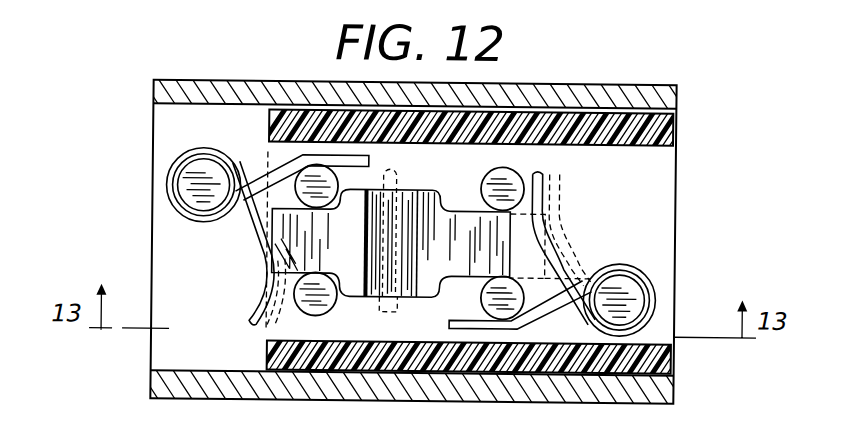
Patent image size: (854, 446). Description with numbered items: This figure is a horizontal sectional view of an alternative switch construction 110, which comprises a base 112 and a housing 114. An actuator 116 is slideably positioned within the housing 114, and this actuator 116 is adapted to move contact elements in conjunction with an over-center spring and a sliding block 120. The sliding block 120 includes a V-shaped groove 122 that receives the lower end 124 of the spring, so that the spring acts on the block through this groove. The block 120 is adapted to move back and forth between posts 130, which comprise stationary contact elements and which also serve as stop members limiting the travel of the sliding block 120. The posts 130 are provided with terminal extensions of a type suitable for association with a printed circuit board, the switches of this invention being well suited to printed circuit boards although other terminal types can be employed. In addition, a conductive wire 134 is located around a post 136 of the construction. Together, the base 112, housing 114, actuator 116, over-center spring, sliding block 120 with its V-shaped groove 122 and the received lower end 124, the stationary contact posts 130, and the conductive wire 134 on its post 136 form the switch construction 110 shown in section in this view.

The switch construction 110 is at (96, 181).
The base 112 is at (153, 273).
The housing 114 is at (218, 393).
The actuator 116 is at (676, 131).
The sliding block 120 is at (350, 238).
The V-shaped groove 122 is at (407, 285).
The lower end of the spring 124 is at (395, 225).
The posts 130 is at (486, 174).
The conductive wire 134 is at (250, 229).
The post 136 is at (200, 192).